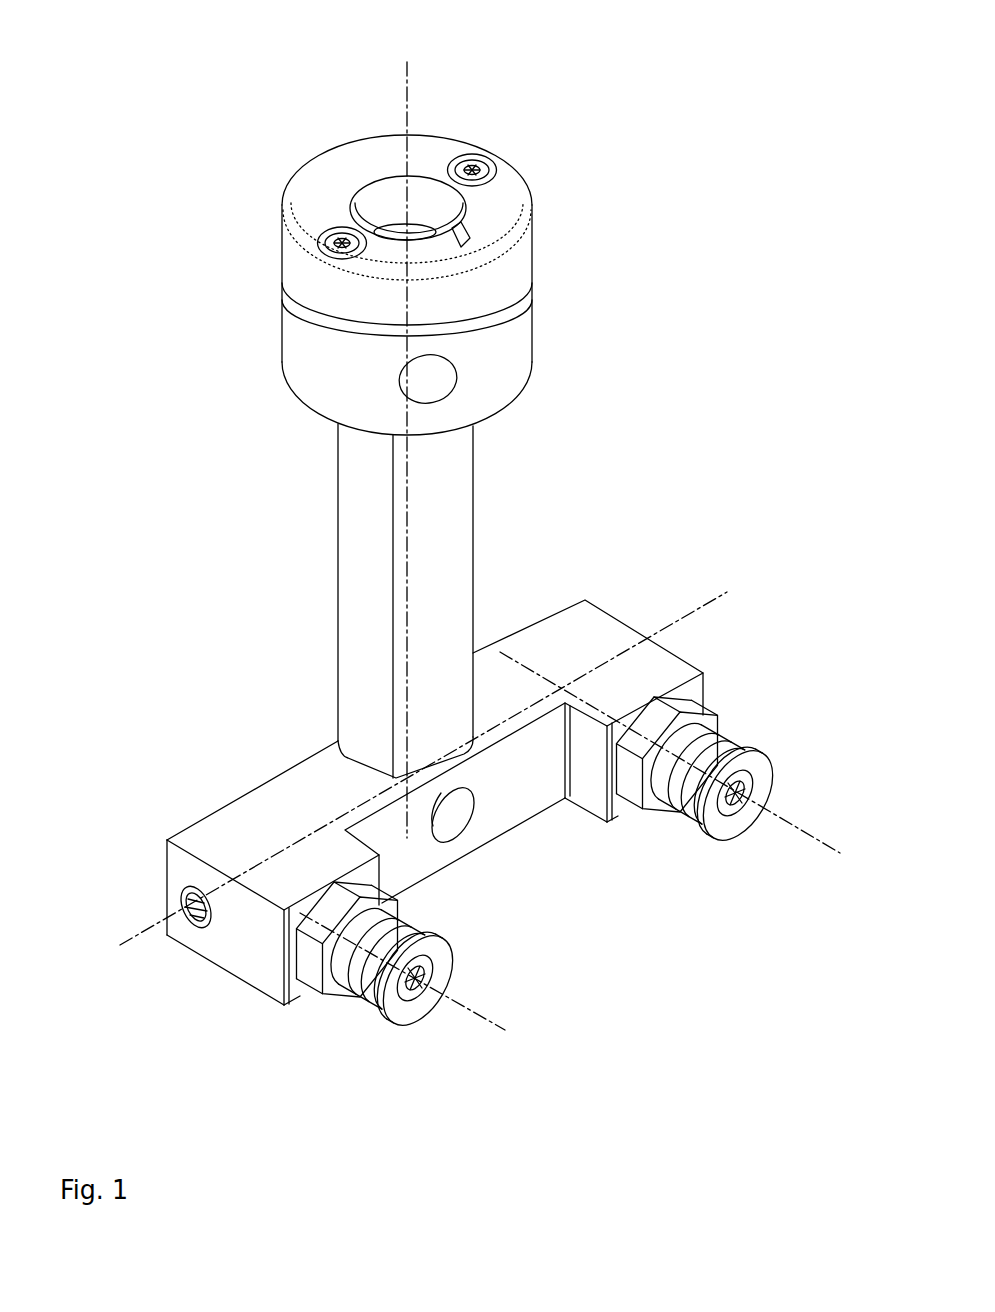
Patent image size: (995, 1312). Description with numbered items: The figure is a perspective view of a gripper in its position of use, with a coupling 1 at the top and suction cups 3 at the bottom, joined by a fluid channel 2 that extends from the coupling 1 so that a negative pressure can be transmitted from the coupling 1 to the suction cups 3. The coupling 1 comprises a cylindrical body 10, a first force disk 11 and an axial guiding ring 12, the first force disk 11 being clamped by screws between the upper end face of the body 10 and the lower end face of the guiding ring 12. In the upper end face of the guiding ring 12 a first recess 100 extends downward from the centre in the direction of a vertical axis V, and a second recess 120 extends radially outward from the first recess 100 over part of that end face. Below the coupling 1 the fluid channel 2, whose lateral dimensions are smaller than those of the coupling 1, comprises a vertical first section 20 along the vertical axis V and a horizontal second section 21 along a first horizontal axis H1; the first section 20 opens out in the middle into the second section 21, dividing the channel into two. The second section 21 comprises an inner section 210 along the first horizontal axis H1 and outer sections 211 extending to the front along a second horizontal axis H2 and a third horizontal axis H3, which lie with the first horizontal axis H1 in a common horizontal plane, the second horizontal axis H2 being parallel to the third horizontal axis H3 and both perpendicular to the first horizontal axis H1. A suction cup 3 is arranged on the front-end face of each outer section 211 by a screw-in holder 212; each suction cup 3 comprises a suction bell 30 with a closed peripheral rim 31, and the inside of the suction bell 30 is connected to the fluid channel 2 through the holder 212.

The coupling 1 is at (726, 138).
The fluid channel 2 is at (726, 453).
The suction cup 3 is at (497, 986).
The cylindrical body 10 is at (327, 390).
The first force disk 11 is at (297, 295).
The axial guiding ring 12 is at (316, 183).
The vertical first section 20 is at (363, 548).
The horizontal second section 21 is at (188, 721).
The suction bell 30 is at (403, 1010).
The closed peripheral rim 31 is at (450, 949).
The first recess 100 is at (398, 208).
The second recess 120 is at (462, 233).
The inner section 210 is at (303, 770).
The outer section 211 is at (667, 667).
The screw-in holder 212 is at (383, 927).
The vertical axis V is at (408, 95).
The first horizontal axis H1 is at (138, 935).
The second horizontal axis H2 is at (517, 1037).
The third horizontal axis H3 is at (803, 852).